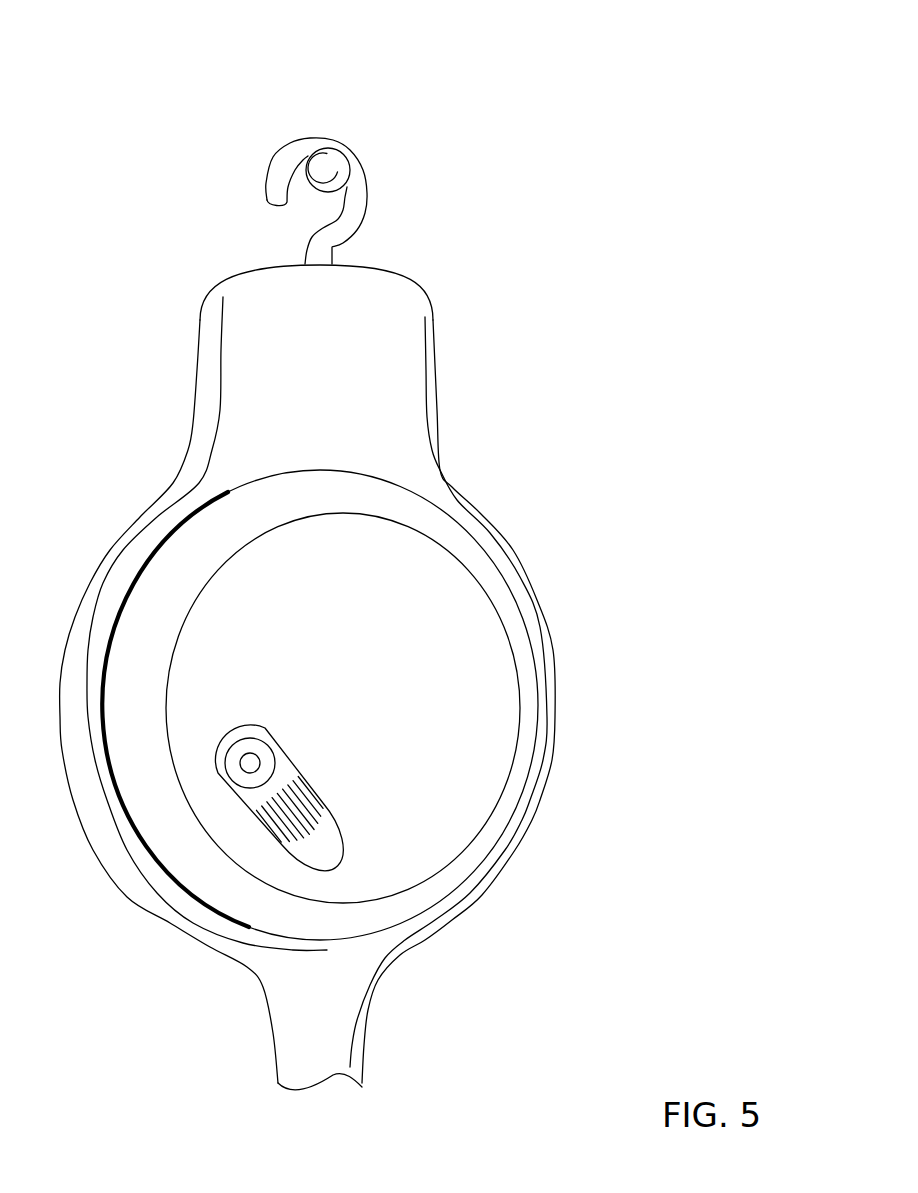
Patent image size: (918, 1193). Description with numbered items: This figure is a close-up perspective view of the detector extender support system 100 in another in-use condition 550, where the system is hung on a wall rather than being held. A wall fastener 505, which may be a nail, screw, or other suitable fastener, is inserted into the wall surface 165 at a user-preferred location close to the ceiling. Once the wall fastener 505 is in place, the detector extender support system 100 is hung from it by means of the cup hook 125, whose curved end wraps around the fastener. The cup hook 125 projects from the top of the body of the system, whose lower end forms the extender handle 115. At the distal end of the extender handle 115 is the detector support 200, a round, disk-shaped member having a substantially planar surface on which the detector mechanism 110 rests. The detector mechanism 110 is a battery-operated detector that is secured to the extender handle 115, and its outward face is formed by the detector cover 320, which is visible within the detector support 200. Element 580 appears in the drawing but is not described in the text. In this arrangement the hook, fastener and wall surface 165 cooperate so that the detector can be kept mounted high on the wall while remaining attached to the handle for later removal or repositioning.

The detector extender support system 100 is at (570, 88).
The in-use condition 550 is at (600, 135).
The cup hook 125 is at (275, 153).
The wall fastener 505 is at (328, 167).
The wall surface 165 is at (455, 200).
The detector support 200 is at (93, 573).
The detector mechanism 110 is at (513, 680).
The indicator capsule 580 is at (488, 770).
The detector cover 320 is at (389, 788).
The extender handle 115 is at (290, 1068).